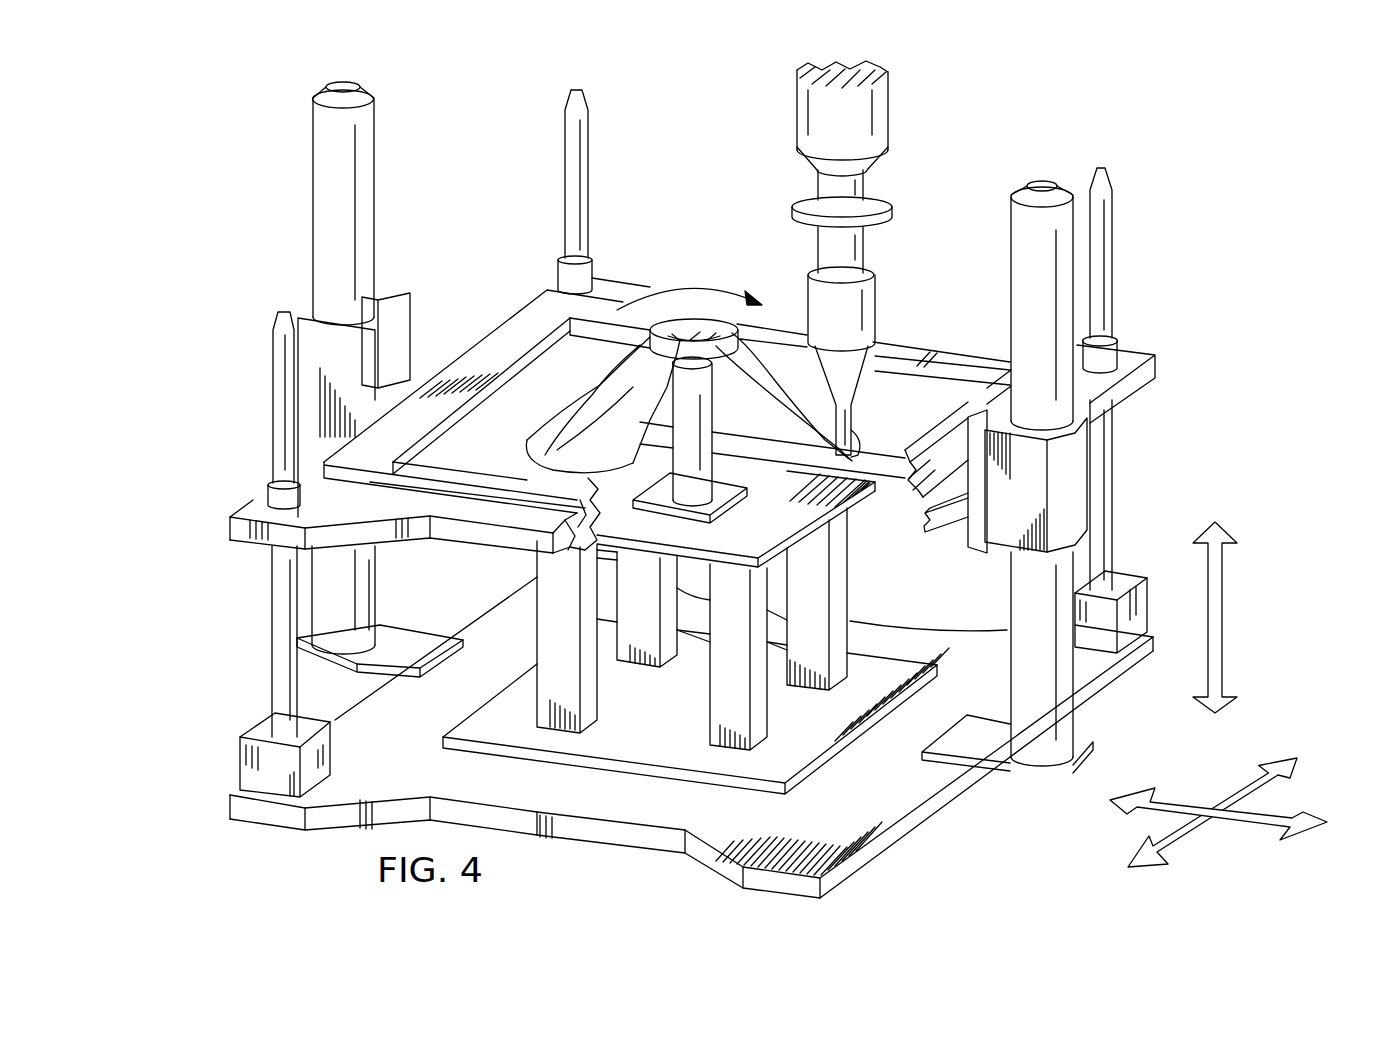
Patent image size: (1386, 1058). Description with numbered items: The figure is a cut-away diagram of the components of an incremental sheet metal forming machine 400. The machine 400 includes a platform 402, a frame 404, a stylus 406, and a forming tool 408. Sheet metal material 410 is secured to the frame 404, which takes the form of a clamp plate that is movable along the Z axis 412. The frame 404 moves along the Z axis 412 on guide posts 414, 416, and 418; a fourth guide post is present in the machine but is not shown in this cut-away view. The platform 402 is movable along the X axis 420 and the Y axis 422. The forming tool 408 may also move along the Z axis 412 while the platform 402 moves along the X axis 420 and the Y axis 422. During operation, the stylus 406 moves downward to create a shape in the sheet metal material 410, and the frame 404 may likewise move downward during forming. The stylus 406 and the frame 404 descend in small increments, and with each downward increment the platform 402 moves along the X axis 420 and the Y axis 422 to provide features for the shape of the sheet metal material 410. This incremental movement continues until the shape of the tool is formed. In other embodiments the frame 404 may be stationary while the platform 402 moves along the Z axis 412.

The incremental sheet metal forming machine 400 is at (739, 486).
The platform 402 is at (867, 601).
The frame 404 is at (1137, 350).
The stylus 406 is at (891, 118).
The forming tool 408 is at (716, 413).
The sheet metal material 410 is at (530, 387).
The Z axis 412 is at (1222, 614).
The guide post 414 is at (273, 404).
The guide post 416 is at (563, 176).
The guide post 418 is at (1113, 258).
The X axis 420 is at (1197, 838).
The Y axis 422 is at (1178, 800).